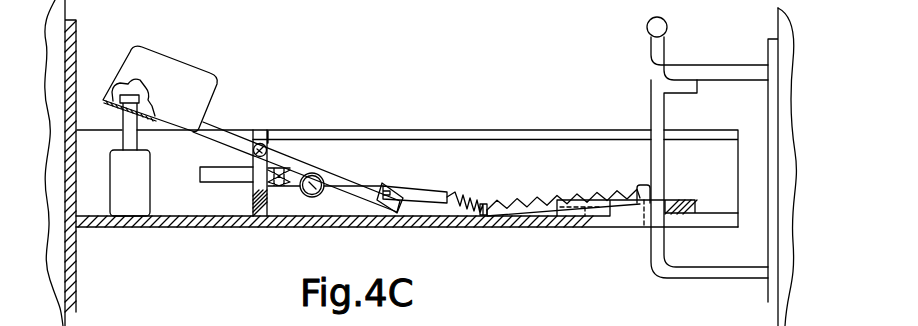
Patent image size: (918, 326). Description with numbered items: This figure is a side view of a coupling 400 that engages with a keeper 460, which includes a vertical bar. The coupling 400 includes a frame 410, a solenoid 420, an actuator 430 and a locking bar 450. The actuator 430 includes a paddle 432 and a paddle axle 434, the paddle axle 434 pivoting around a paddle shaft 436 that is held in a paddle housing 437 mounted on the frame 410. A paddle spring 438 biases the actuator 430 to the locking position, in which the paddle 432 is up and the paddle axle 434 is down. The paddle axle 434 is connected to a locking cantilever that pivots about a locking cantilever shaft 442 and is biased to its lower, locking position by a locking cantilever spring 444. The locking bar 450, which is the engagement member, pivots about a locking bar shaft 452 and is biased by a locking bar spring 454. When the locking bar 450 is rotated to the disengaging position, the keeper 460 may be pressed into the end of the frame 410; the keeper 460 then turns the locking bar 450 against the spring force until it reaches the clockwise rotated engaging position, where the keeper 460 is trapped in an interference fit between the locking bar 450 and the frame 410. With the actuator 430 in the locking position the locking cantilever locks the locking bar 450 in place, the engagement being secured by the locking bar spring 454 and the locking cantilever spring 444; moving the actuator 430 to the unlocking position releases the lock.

The coupling 400 is at (426, 51).
The frame 410 is at (130, 232).
The solenoid 420 is at (140, 187).
The actuator 430 is at (360, 183).
The paddle 432 is at (170, 90).
The paddle axle 434 is at (307, 165).
The paddle shaft 436 is at (268, 143).
The paddle housing 437 is at (260, 173).
The paddle spring 438 is at (285, 187).
The locking cantilever shaft 442 is at (315, 197).
The locking cantilever spring 444 is at (484, 173).
The locking bar 450 is at (620, 207).
The locking bar shaft 452 is at (643, 187).
The locking bar spring 454 is at (505, 195).
The keeper 460 is at (658, 115).